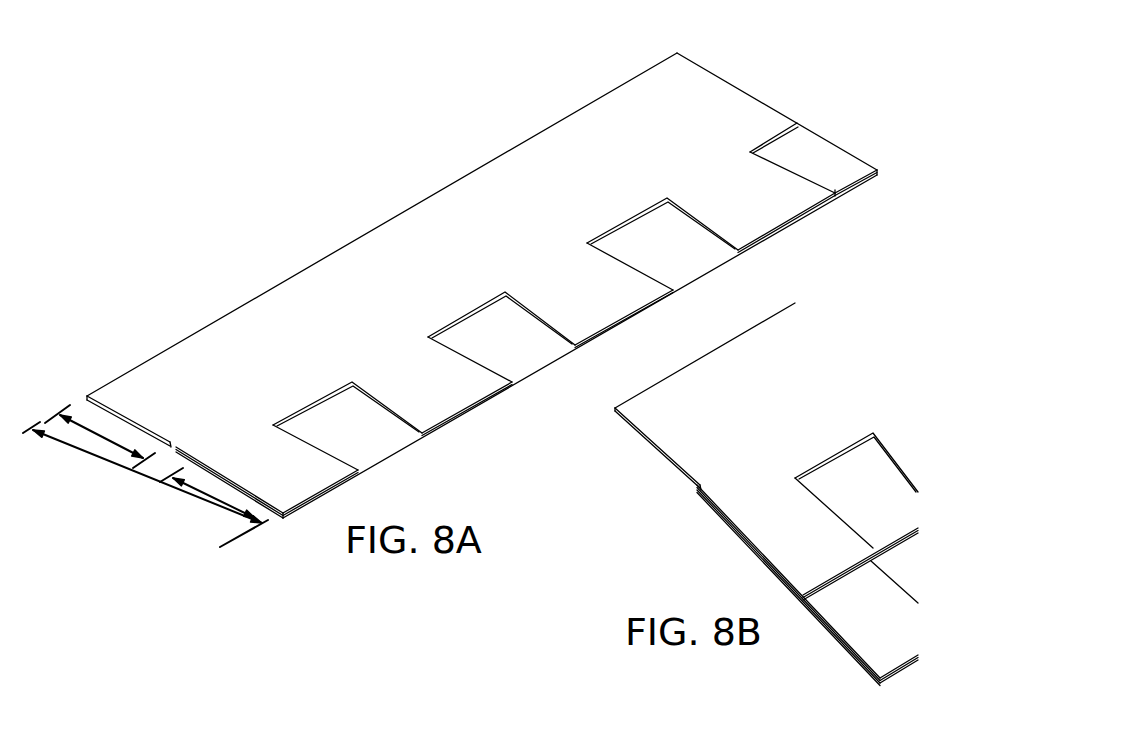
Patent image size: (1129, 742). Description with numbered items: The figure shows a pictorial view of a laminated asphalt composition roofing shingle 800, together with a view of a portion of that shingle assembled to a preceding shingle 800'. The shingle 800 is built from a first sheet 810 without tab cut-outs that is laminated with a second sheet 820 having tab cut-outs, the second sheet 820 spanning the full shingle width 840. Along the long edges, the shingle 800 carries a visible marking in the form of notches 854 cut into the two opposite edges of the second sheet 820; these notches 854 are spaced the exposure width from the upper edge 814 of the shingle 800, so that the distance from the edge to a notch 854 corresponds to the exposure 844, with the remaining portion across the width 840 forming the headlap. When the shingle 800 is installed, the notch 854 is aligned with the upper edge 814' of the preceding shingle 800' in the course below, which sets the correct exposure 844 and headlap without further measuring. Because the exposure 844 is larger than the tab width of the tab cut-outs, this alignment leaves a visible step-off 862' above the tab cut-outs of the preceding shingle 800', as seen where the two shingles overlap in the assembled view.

In FIG. 8A, the laminated asphalt composition roofing shingle 800 is at (507, 262).
In FIG. 8B, the laminated asphalt composition roofing shingle 800 is at (729, 451).
In FIG. 8B, the preceding shingle 800' is at (807, 605).
In FIG. 8A, the first sheet 810 is at (830, 146).
In FIG. 8A, the upper edge 814 is at (382, 224).
In FIG. 8B, the upper edge of preceding course 814' is at (657, 472).
In FIG. 8A, the second sheet 820 is at (717, 78).
In FIG. 8A, the shingle width 840 is at (202, 527).
In FIG. 8A, the exposure 844 is at (117, 440).
In FIG. 8A, the notch 854 is at (762, 100).
In FIG. 8B, the notch 854 is at (697, 485).
In FIG. 8B, the step-off 862' is at (905, 571).